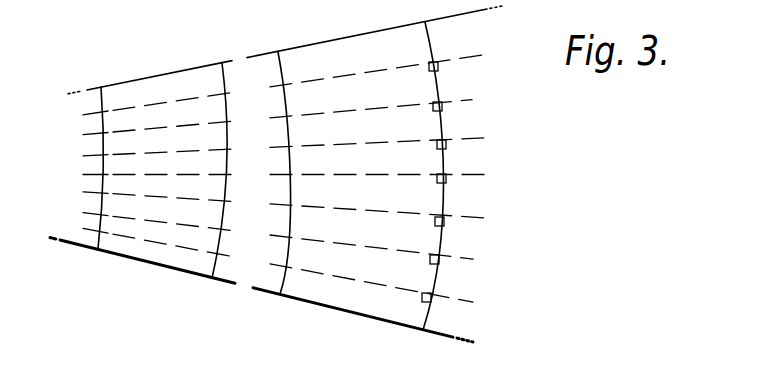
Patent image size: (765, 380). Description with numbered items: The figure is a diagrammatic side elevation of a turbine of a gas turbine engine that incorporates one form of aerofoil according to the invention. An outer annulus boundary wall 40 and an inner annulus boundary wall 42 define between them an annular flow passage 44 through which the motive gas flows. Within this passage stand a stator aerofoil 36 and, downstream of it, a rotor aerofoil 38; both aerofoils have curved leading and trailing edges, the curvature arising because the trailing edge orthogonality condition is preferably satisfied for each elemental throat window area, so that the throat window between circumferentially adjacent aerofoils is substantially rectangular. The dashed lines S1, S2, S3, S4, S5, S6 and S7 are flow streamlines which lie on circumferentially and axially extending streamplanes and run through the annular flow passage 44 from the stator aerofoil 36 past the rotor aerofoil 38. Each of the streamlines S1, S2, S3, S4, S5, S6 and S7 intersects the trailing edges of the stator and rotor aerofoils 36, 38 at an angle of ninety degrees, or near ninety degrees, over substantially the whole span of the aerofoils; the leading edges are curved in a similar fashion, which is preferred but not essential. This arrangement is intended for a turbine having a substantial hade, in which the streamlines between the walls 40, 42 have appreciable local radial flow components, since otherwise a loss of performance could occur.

The stator aerofoil 36 is at (139, 251).
The rotor aerofoil 38 is at (363, 303).
The outer annulus boundary wall 40 is at (308, 45).
The inner annulus boundary wall 42 is at (210, 283).
The annular flow passage 44 is at (263, 168).
The streamline S1 is at (376, 64).
The streamline S2 is at (371, 99).
The streamline S3 is at (377, 131).
The streamline S4 is at (378, 165).
The streamline S5 is at (379, 203).
The streamline S6 is at (371, 242).
The streamline S7 is at (371, 277).